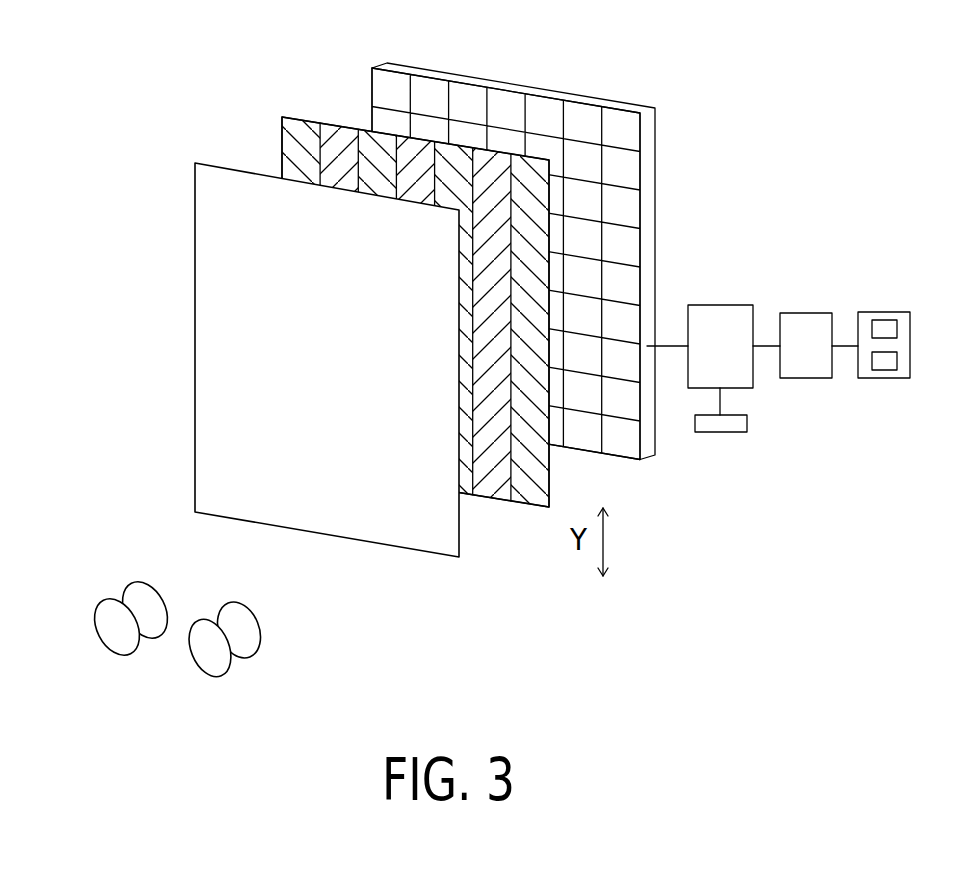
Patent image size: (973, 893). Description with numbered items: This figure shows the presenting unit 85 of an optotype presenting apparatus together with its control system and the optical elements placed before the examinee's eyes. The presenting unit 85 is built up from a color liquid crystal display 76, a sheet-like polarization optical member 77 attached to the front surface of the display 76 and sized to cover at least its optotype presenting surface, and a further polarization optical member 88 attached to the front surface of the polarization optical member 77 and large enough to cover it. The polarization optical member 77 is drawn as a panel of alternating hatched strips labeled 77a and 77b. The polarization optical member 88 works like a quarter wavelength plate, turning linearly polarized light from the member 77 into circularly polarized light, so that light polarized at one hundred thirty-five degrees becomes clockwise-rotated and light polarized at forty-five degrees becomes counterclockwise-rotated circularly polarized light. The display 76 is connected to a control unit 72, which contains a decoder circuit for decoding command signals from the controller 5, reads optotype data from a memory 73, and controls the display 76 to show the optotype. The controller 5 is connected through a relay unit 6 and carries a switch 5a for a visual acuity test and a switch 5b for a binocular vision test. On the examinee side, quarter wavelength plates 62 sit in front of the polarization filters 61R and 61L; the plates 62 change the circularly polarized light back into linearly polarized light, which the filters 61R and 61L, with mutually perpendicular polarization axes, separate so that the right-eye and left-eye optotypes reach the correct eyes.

The presenting unit 85 is at (450, 333).
The color liquid crystal display 76 is at (640, 487).
The polarization optical member 77 is at (437, 333).
The first retardation region 77a is at (530, 177).
The second retardation region 77b is at (493, 183).
The polarization optical member 88 is at (385, 527).
The control unit 72 is at (732, 318).
The memory 73 is at (702, 435).
The relay unit 6 is at (803, 320).
The controller 5 is at (906, 316).
The switch for a visual acuity test 5a is at (898, 328).
The switch for a binocular vision test 5b is at (900, 362).
The quarter wavelength plate 62 is at (122, 595).
The polarization filter for a left eye 61L is at (112, 648).
The polarization filter for a right eye 61R is at (232, 670).